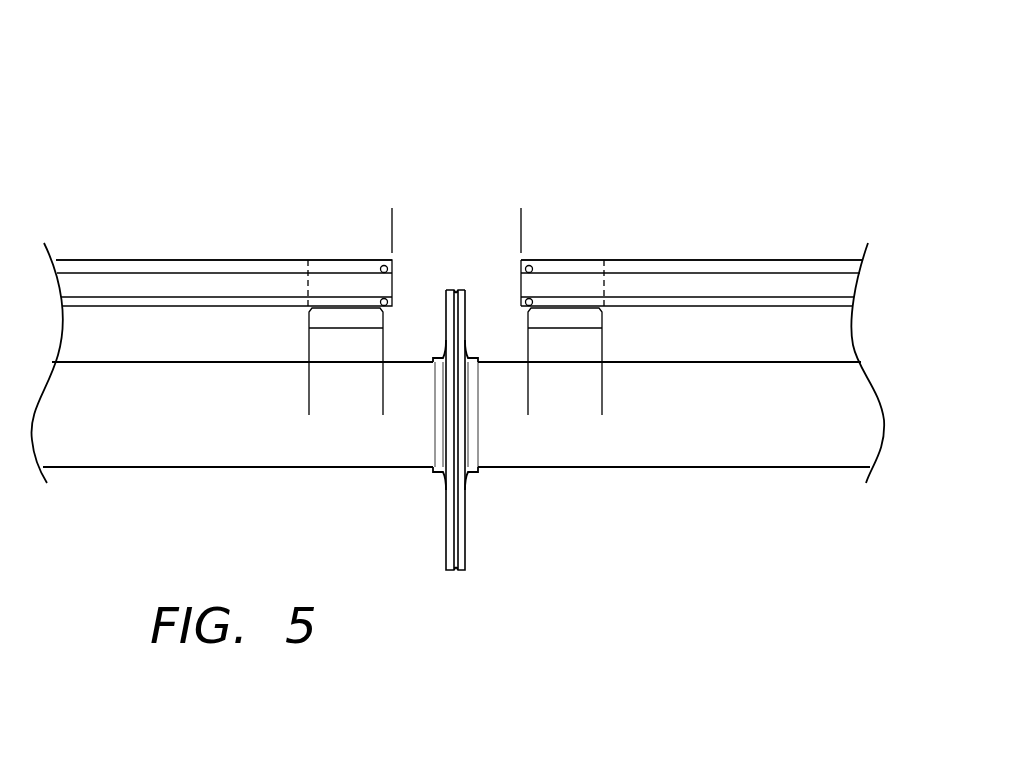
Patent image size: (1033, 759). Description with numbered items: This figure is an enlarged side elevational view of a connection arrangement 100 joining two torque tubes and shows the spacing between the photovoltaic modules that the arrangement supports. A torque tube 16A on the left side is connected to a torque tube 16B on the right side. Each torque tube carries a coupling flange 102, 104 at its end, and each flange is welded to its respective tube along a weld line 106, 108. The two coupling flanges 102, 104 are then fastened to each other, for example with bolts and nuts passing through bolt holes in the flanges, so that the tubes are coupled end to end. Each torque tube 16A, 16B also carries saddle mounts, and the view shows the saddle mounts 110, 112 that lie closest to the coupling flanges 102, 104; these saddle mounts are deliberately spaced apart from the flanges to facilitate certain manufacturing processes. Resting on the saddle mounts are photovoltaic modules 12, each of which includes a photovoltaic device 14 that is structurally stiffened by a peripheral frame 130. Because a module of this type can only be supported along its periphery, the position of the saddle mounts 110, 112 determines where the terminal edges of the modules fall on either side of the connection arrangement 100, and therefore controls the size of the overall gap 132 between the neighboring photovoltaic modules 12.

The connection arrangement 100 is at (242, 111).
The photovoltaic module 12 is at (246, 196).
The photovoltaic device 14 is at (254, 256).
The torque tube 16A is at (196, 472).
The torque tube 16B is at (639, 472).
The coupling flange 102 is at (444, 562).
The coupling flange 104 is at (467, 562).
The weld line 106 is at (436, 480).
The weld line 108 is at (476, 480).
The saddle mount 110 is at (298, 336).
The saddle mount 112 is at (610, 344).
The peripheral frame 130 is at (558, 256).
The gap 132 is at (520, 226).